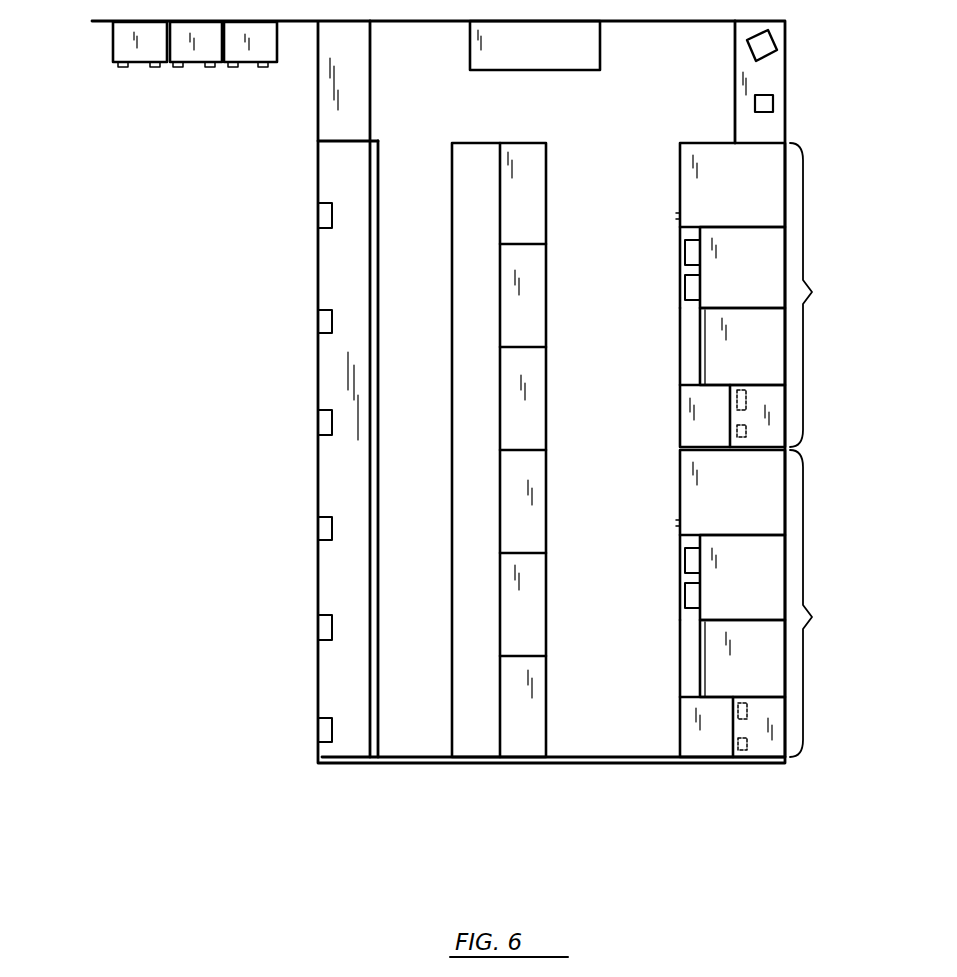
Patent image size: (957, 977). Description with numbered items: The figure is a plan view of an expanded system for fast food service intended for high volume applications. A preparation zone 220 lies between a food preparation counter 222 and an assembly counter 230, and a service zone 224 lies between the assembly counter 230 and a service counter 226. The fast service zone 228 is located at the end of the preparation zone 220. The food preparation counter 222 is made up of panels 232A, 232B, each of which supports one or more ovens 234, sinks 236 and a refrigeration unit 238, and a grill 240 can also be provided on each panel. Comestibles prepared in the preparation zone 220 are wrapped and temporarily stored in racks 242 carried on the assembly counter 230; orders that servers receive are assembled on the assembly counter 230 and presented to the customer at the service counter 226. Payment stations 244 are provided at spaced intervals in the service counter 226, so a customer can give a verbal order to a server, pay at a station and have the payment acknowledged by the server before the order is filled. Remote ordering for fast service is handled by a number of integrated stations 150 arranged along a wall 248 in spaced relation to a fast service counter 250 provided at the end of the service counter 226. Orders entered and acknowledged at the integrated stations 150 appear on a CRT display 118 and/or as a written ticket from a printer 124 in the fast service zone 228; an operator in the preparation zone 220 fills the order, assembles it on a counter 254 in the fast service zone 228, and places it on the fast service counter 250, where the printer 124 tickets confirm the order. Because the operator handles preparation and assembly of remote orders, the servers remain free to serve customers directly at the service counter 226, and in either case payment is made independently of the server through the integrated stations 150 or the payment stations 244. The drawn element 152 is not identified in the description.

The CRT display 118 is at (777, 50).
The printer 124 is at (773, 101).
The integrated stations 150 is at (140, 67).
The side panel 152 is at (735, 113).
The preparation zone 220 is at (640, 403).
The food preparation counter 222 is at (740, 770).
The service zone 224 is at (440, 422).
The service counter 226 is at (343, 765).
The fast service zone 228 is at (700, 88).
The assembly counter 230 is at (519, 765).
The panel 232A is at (841, 295).
The panel 232B is at (841, 603).
The oven 234 is at (778, 286).
The sinks 236 is at (684, 285).
The refrigeration unit 238 is at (778, 204).
The grill 240 is at (775, 366).
The racks 242 is at (535, 190).
The payment stations 244 is at (318, 215).
The wall 248 is at (97, 22).
The fast service counter 250 is at (318, 126).
The counter 254 is at (570, 59).